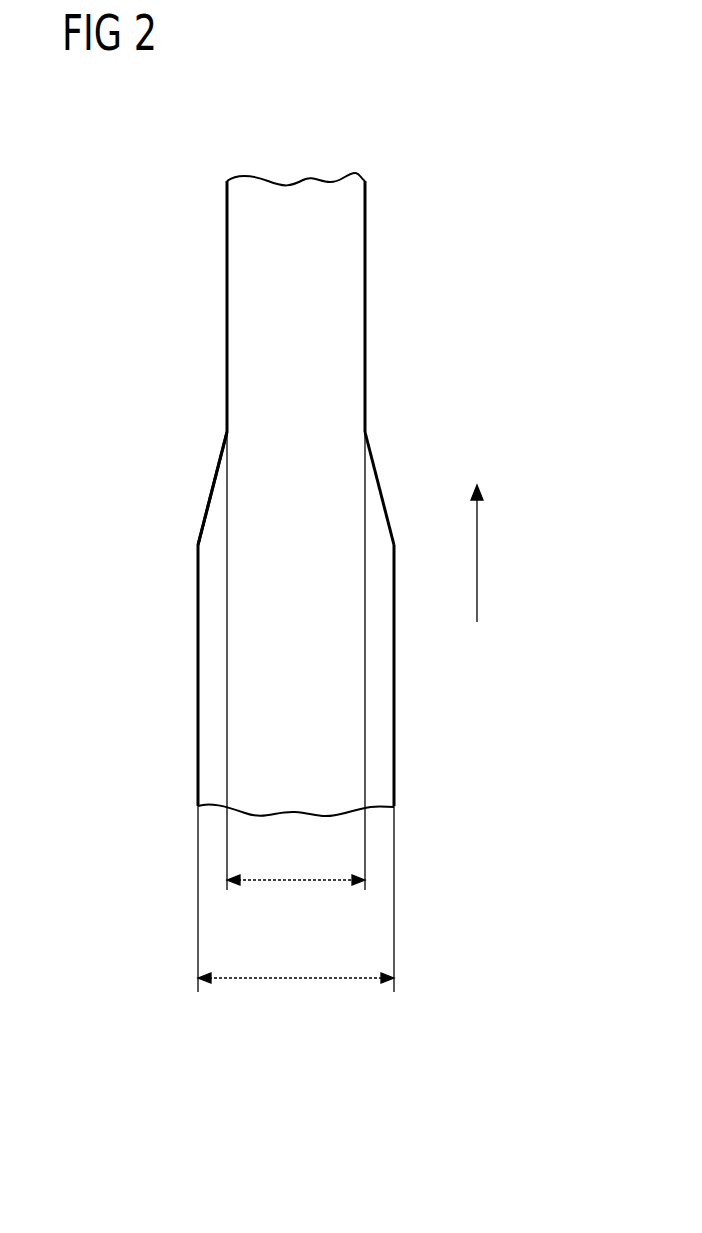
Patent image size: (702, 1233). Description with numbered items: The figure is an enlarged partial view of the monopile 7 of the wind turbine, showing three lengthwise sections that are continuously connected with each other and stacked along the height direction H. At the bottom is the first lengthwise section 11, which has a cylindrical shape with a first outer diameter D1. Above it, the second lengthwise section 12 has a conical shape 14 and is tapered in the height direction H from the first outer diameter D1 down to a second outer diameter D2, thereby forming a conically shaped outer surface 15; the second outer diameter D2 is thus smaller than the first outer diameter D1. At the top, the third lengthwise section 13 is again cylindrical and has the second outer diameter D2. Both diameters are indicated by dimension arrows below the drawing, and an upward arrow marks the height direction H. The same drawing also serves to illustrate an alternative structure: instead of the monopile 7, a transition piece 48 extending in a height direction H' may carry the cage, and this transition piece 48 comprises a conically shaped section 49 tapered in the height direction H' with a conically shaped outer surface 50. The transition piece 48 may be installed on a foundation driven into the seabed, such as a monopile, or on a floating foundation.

The monopile 7 is at (147, 207).
The transition piece 48 is at (313, 616).
The third lengthwise section 13 is at (227, 293).
The second lengthwise section 12 is at (211, 490).
The conical shape 14 is at (296, 488).
The conically shaped section 49 is at (296, 488).
The conically shaped outer surface 15 is at (196, 518).
The conically shaped outer surface 50 is at (212, 488).
The first lengthwise section 11 is at (198, 640).
The first outer diameter D1 is at (295, 982).
The second outer diameter D2 is at (295, 884).
The height direction H is at (523, 553).
The height direction H' is at (477, 553).